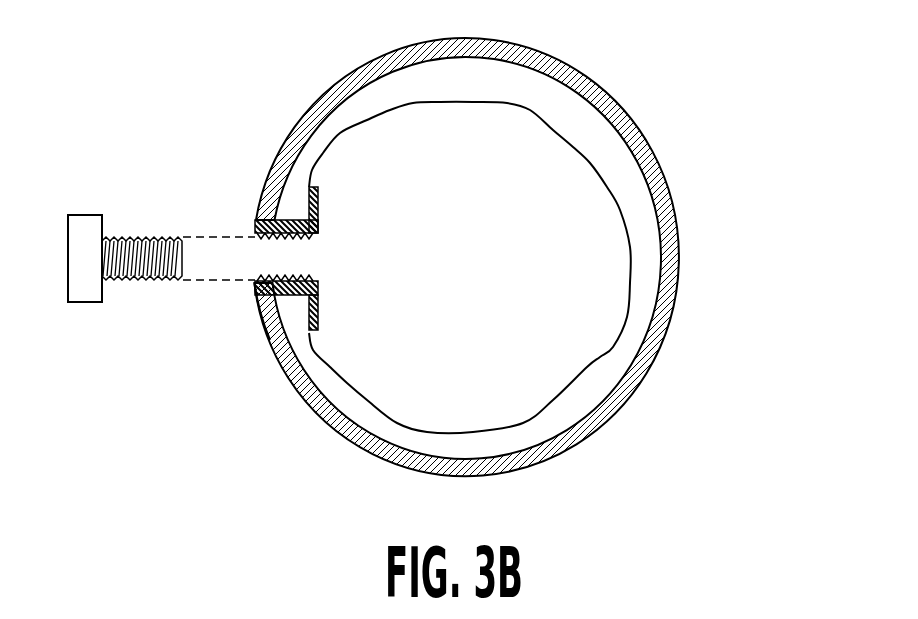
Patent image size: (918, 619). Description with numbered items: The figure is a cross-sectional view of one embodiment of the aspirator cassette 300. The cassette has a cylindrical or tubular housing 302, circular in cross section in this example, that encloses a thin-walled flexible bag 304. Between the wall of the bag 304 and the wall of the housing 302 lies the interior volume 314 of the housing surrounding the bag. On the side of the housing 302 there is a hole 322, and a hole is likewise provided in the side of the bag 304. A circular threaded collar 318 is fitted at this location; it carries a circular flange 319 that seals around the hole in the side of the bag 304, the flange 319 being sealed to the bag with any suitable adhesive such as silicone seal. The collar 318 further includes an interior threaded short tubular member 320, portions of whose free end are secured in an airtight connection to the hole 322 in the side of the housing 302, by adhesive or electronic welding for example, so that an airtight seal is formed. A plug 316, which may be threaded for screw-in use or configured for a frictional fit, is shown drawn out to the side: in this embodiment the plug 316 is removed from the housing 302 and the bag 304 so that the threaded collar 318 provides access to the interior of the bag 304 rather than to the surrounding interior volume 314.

The aspirator cassette 300 is at (429, 238).
The housing 302 is at (577, 68).
The flexible bag 304 is at (457, 107).
The interior volume 314 is at (612, 364).
The plug 316 is at (83, 228).
The threaded collar 318 is at (318, 238).
The flange 319 is at (320, 313).
The tubular member 320 is at (310, 274).
The hole 322 is at (260, 300).